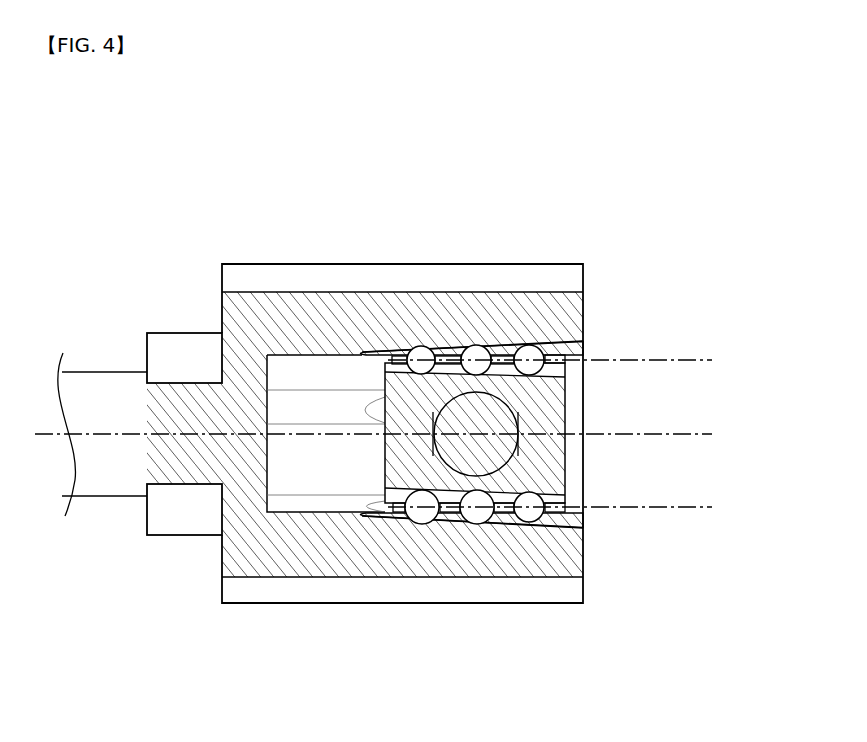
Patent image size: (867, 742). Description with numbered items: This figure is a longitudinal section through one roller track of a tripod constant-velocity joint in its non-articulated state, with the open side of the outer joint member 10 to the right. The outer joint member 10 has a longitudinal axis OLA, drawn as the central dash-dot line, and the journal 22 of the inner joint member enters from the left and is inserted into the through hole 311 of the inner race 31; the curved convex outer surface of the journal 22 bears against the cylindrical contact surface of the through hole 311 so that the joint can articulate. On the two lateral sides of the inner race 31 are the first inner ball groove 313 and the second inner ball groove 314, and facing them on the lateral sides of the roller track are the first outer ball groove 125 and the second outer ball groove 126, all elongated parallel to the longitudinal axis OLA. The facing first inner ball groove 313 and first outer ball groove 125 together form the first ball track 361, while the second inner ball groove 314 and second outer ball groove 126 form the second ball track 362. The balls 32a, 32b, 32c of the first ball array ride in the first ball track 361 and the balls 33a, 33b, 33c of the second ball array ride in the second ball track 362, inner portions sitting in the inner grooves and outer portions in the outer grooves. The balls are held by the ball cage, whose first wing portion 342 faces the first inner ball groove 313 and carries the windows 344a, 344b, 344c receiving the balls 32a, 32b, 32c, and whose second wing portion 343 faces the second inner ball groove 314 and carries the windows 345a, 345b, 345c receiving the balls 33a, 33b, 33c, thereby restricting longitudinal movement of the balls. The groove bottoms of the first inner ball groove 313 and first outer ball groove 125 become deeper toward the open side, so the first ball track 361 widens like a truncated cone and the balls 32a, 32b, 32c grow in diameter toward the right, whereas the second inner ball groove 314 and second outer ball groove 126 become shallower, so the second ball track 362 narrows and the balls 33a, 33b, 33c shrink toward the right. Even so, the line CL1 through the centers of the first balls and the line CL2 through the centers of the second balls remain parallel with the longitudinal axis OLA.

The outer joint member 10 is at (240, 328).
The journal 22 is at (458, 455).
The inner race 31 is at (395, 463).
The through hole 311 is at (433, 427).
The first inner ball groove 313 is at (555, 372).
The second inner ball groove 314 is at (555, 497).
The ball 32a is at (531, 345).
The ball 32b is at (476, 345).
The ball 32c is at (421, 346).
The ball 33a is at (529, 522).
The ball 33b is at (477, 524).
The ball 33c is at (422, 524).
The first wing portion 342 is at (360, 346).
The second wing portion 343 is at (362, 521).
The window 344a is at (508, 356).
The window 344b is at (450, 356).
The window 344c is at (398, 356).
The window 345a is at (505, 513).
The window 345b is at (450, 513).
The window 345c is at (399, 513).
The first ball track 361 is at (502, 373).
The second ball track 362 is at (500, 488).
The first outer ball groove 125 is at (558, 348).
The second outer ball groove 126 is at (558, 513).
The line connecting centers of the balls of the first ball array CL1 is at (693, 359).
The line connecting centers of the balls of the second ball array CL2 is at (693, 506).
The longitudinal axis OLA is at (693, 434).